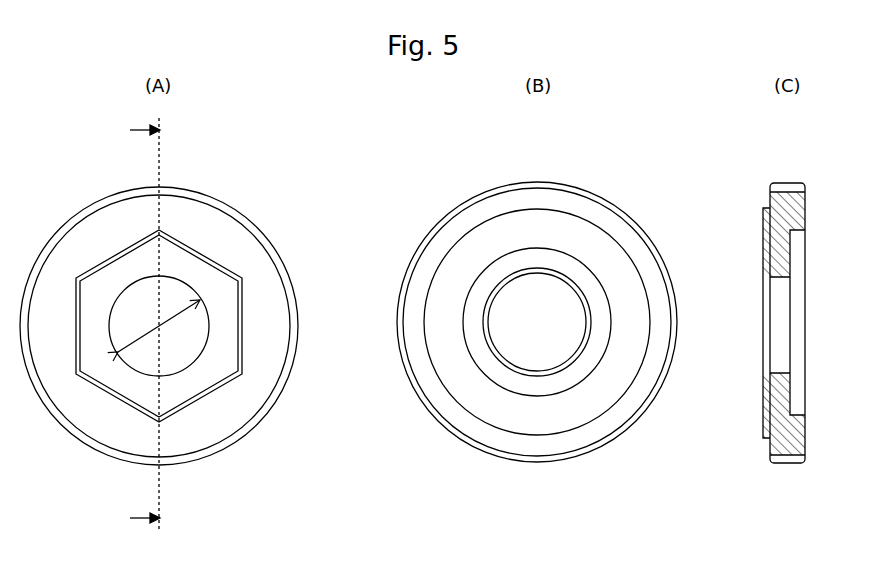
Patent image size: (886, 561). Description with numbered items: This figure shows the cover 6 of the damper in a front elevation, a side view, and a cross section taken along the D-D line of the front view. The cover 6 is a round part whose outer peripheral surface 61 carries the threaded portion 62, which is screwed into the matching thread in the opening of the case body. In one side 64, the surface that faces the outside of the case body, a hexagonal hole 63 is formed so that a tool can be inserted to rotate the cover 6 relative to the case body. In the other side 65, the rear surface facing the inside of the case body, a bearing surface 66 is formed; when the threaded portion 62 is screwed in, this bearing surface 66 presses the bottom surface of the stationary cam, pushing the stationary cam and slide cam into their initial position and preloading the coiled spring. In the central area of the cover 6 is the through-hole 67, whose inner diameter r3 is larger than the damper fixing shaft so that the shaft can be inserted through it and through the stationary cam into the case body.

The cover 6 is at (306, 140).
The outer peripheral surface 61 is at (300, 348).
The threaded portion 62 is at (293, 297).
The hexagonal hole 63 is at (118, 375).
The one side 64 is at (187, 210).
The other side 65 is at (562, 200).
The bearing surface 66 is at (468, 388).
The through-hole 67 is at (138, 302).